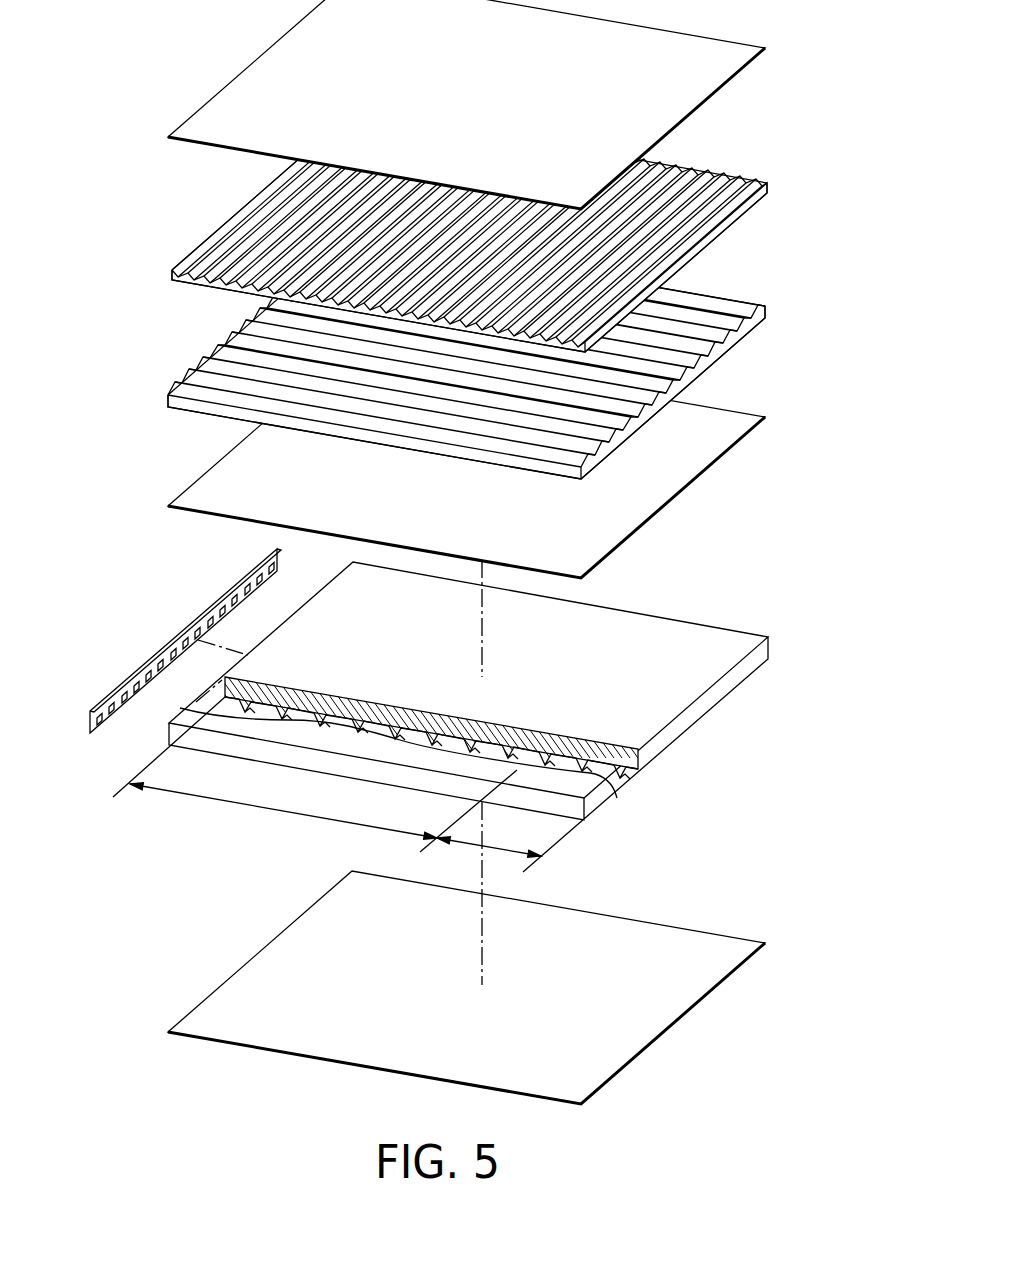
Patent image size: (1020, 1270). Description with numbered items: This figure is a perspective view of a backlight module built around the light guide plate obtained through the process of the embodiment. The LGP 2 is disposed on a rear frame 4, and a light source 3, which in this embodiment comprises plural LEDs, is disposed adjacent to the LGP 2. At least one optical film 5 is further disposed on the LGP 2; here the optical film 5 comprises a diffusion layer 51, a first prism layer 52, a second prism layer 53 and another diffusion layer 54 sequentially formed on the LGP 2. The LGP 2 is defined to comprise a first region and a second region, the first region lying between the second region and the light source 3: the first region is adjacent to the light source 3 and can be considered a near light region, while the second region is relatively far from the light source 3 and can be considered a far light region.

The LGP 2 is at (732, 599).
The light source 3 is at (142, 668).
The rear frame 4 is at (237, 990).
The optical film 5 is at (418, 289).
The diffusion layer 51 is at (225, 465).
The first prism layer 52 is at (217, 352).
The second prism layer 53 is at (218, 233).
The another diffusion layer 54 is at (441, 104).